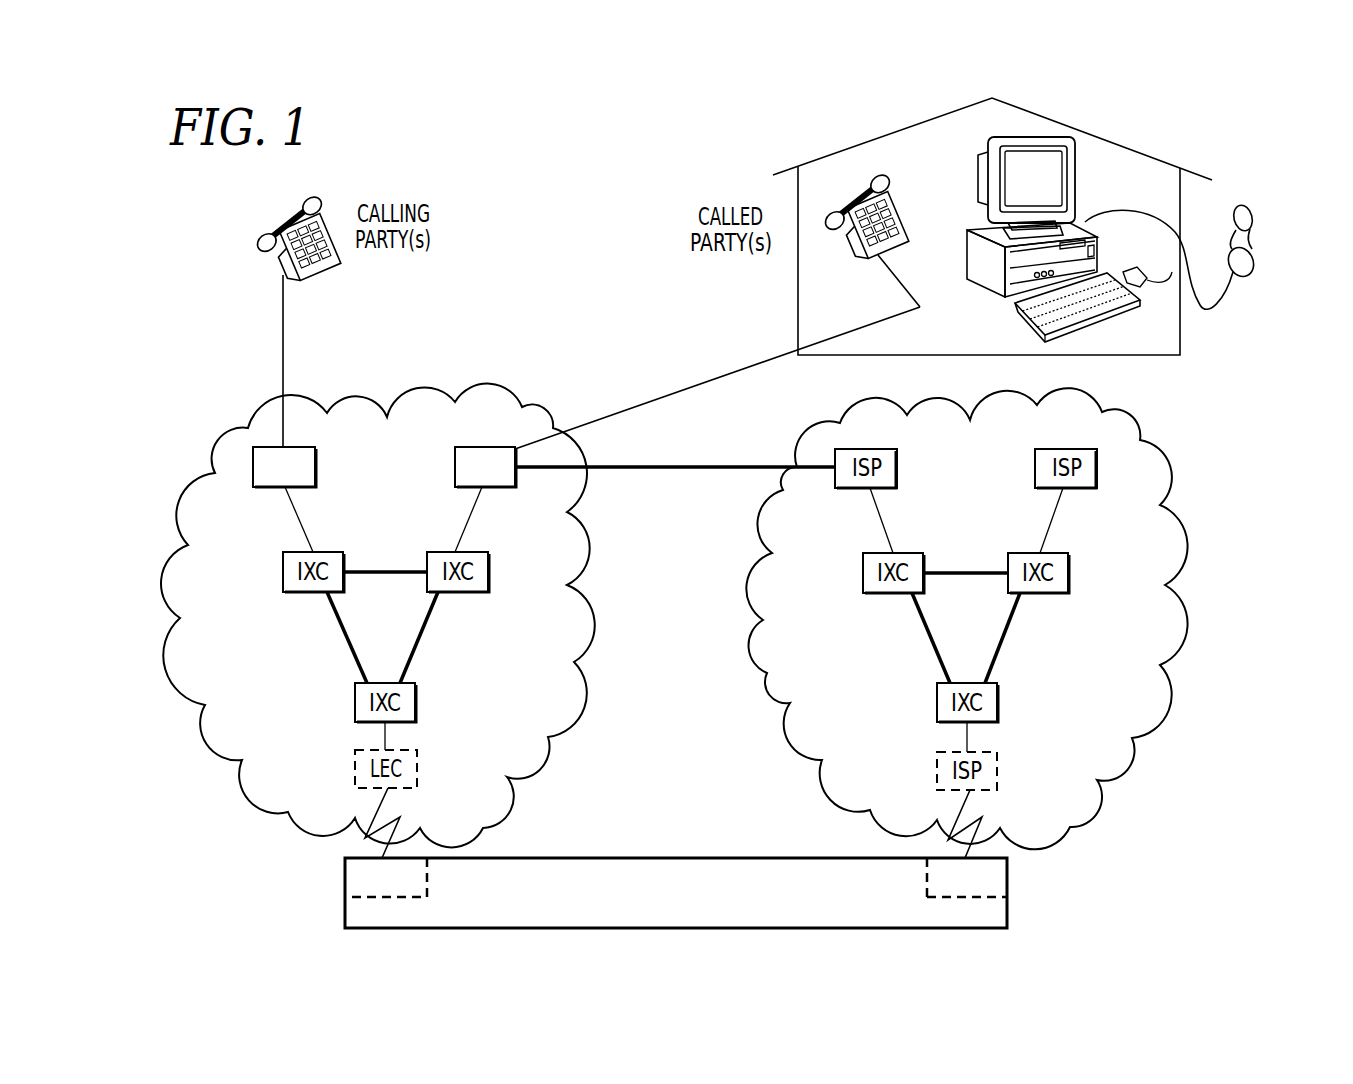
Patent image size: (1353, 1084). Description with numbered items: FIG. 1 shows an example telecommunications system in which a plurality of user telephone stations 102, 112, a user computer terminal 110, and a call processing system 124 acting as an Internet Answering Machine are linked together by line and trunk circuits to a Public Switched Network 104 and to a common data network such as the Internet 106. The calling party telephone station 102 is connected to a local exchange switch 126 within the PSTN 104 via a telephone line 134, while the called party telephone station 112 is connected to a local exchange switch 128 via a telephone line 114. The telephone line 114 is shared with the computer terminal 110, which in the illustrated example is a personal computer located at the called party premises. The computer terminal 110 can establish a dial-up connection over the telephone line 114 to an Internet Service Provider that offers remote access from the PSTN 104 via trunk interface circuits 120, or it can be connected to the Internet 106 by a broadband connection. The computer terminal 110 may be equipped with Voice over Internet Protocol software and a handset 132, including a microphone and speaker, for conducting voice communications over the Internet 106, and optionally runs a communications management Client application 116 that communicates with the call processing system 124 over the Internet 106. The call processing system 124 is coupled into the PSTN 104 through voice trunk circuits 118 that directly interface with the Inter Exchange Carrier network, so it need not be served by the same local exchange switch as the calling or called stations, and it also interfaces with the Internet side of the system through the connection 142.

The user telephone station 102 is at (287, 217).
The telephone line 134 is at (283, 348).
The Public Switched Network (PSTN) 104 is at (236, 428).
The local exchange switch 126 is at (303, 447).
The local exchange switch 128 is at (490, 447).
The voice trunk circuits 118 is at (357, 818).
The trunk interface circuits 120 is at (743, 465).
The telephone line 114 is at (705, 380).
The Internet 106 is at (1140, 422).
The connection between ISP and call processing system 142 is at (985, 823).
The call processing system 124 is at (740, 857).
The user telephone station 112 is at (880, 173).
The computer terminal 110 is at (1047, 239).
The Client application 116 is at (1043, 183).
The handset 132 is at (1243, 207).